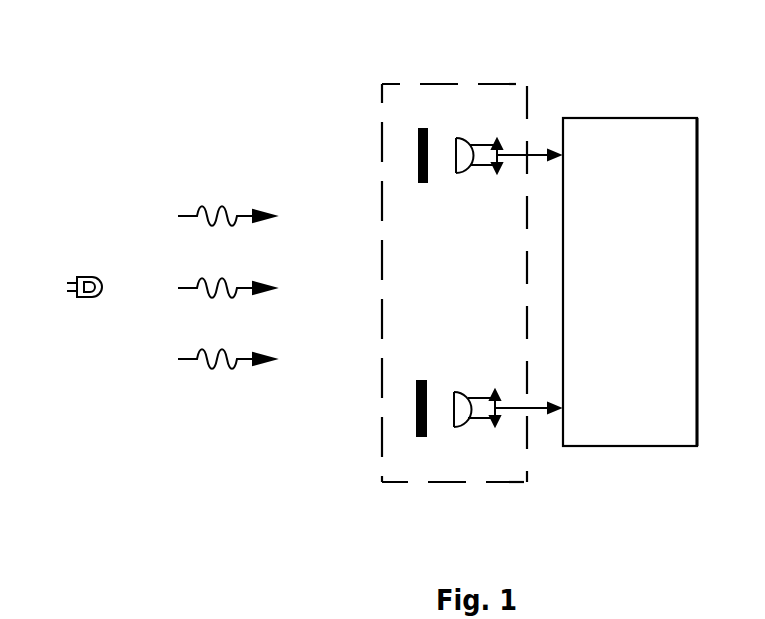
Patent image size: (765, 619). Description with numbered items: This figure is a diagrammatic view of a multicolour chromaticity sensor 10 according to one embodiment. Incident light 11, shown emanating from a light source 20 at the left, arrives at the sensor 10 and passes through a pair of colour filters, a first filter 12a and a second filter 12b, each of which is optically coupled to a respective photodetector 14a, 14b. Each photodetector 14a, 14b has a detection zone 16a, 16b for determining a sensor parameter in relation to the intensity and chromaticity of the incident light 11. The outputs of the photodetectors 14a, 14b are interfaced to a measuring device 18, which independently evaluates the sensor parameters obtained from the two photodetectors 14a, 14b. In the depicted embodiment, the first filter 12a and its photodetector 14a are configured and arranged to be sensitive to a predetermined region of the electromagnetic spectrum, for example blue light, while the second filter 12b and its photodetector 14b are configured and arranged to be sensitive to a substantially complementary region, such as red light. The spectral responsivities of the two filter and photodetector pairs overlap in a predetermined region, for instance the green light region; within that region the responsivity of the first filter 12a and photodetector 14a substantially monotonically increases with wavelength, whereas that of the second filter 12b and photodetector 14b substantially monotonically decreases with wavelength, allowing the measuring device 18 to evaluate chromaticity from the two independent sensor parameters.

The sensor 10 is at (382, 84).
The incident light 11 is at (223, 206).
The first filter 12a is at (425, 128).
The second filter 12b is at (422, 437).
The photodetector 14a is at (530, 145).
The photodetector 14b is at (505, 430).
The detection zone 16a is at (462, 170).
The detection zone 16b is at (455, 395).
The measuring device 18 is at (628, 446).
The light source 20 is at (84, 298).